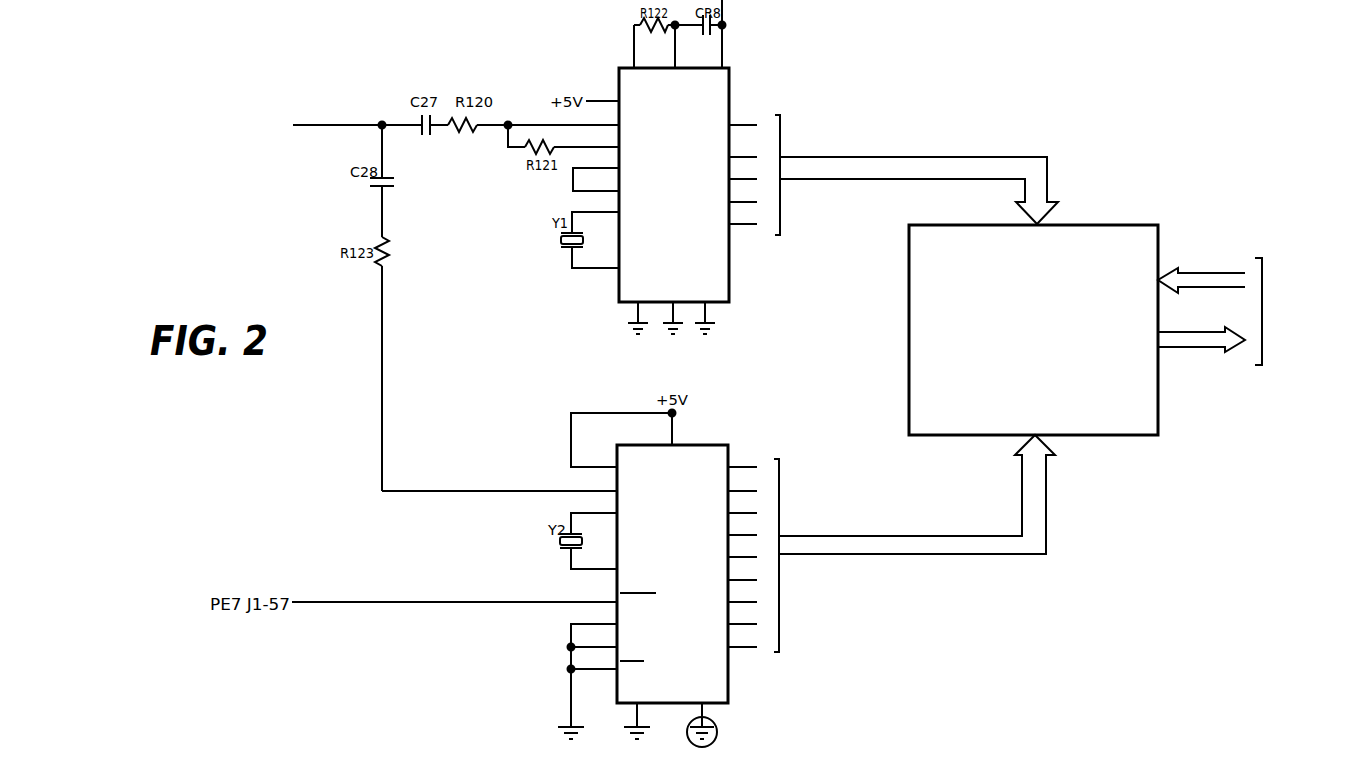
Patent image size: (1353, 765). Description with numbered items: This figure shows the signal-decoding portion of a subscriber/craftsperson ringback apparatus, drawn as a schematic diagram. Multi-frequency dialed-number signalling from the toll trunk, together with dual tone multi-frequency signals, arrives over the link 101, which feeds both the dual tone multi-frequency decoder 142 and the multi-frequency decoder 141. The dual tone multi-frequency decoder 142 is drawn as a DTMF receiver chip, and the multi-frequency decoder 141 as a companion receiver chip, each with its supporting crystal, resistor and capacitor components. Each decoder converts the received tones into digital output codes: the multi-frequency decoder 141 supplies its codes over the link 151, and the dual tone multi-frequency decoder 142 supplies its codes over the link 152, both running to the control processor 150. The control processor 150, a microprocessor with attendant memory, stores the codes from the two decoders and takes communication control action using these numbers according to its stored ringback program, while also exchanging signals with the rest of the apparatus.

The link 101 is at (334, 124).
The dual tone multi-frequency decoder 142 is at (730, 74).
The multi-frequency decoder 141 is at (700, 445).
The control processor 150 is at (1126, 225).
The link 152 is at (907, 157).
The link 151 is at (885, 556).